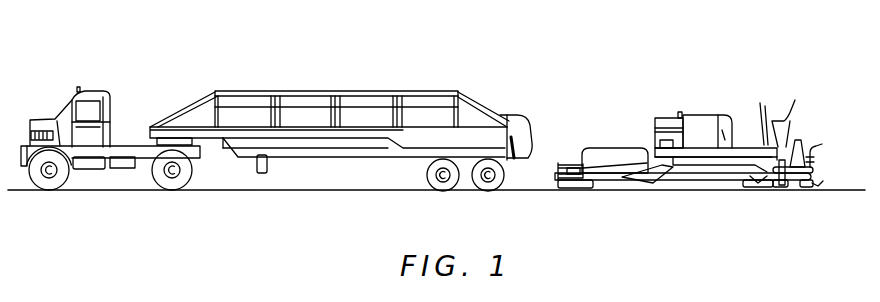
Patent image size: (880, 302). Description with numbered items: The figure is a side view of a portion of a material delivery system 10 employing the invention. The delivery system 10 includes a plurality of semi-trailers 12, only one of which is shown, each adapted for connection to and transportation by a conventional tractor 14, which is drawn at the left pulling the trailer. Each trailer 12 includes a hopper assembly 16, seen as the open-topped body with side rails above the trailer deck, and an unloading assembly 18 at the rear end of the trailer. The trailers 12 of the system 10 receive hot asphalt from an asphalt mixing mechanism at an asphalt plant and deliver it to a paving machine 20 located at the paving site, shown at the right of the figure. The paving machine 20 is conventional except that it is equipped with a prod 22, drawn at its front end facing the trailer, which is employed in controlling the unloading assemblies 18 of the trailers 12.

The material delivery system 10 is at (155, 78).
The tractor 14 is at (73, 84).
The semi-trailer 12 is at (275, 86).
The hopper assembly 16 is at (311, 85).
The unloading assembly 18 is at (522, 172).
The paving machine 20 is at (667, 106).
The prod 22 is at (563, 155).